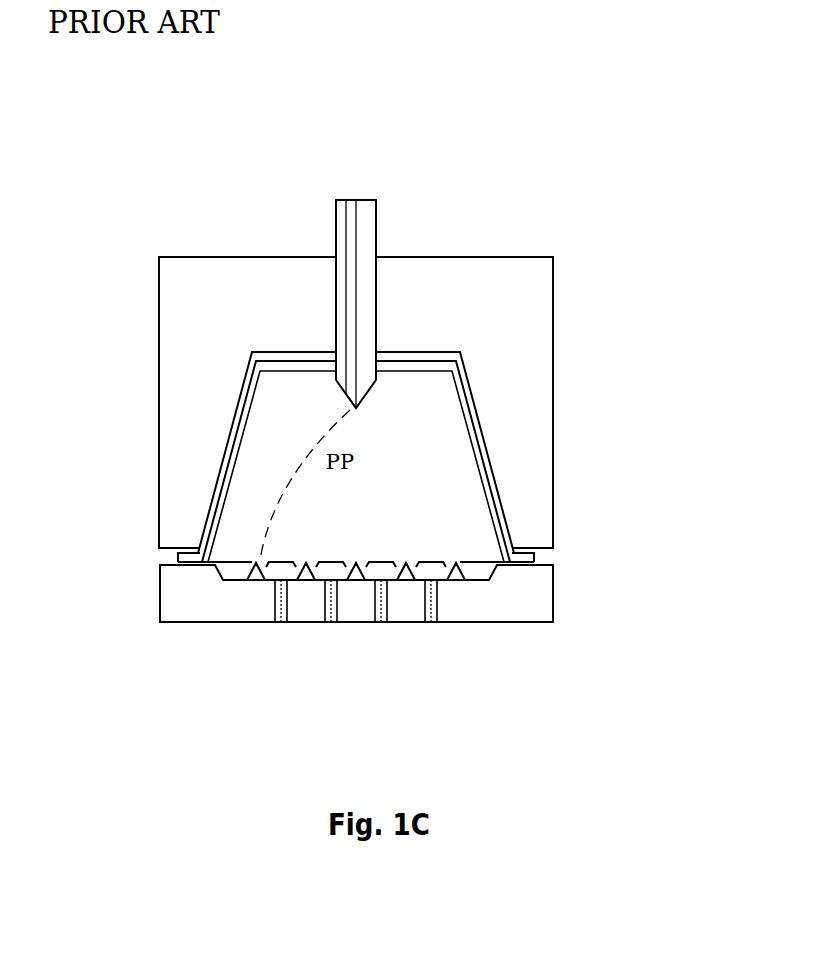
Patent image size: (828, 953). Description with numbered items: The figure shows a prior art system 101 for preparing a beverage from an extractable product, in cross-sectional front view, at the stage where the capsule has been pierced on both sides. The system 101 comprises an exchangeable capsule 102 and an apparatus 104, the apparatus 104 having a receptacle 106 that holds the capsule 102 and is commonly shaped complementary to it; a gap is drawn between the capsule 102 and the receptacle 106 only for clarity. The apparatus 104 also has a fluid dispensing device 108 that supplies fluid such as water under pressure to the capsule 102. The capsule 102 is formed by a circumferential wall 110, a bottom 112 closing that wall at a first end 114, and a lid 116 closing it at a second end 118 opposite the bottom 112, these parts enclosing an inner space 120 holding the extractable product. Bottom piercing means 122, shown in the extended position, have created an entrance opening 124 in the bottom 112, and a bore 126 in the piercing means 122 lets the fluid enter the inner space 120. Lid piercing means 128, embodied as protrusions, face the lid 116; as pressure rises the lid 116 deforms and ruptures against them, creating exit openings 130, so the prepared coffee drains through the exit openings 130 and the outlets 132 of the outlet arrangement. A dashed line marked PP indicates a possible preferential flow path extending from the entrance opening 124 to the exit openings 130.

The system 101 is at (602, 613).
The exchangeable capsule 102 is at (492, 468).
The apparatus 104 is at (612, 237).
The receptacle 106 is at (557, 317).
The fluid dispensing device 108 is at (377, 203).
The circumferential wall 110 is at (488, 490).
The bottom 112 is at (428, 365).
The first end 114 is at (467, 372).
The lid 116 is at (463, 563).
The second end 118 is at (515, 548).
The inner space 120 is at (305, 405).
The bottom piercing means 122 is at (377, 247).
The entrance opening 124 is at (382, 378).
The bore 126 is at (350, 205).
The lid piercing means 128 is at (456, 576).
The exit openings 130 is at (257, 557).
The outlets 132 is at (431, 612).